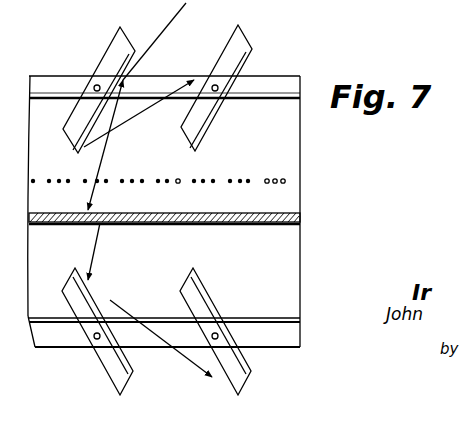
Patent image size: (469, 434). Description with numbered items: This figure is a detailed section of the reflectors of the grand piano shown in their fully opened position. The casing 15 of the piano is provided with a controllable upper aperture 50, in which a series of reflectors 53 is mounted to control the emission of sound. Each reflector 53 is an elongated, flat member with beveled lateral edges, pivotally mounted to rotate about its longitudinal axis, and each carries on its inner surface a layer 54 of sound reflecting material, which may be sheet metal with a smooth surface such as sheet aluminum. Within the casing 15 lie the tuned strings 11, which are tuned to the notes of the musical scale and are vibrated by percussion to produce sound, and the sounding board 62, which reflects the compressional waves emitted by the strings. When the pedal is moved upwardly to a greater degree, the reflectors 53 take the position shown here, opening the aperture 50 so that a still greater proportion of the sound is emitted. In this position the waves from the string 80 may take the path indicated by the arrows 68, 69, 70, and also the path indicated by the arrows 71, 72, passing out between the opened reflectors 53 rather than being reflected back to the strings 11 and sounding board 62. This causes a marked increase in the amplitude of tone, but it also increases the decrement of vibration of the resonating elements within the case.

The tuned strings 11 is at (181, 184).
The casing 15 is at (303, 157).
The upper aperture 50 is at (301, 76).
The reflector 53 is at (113, 53).
The layer of sound reflecting material 54 is at (209, 121).
The sounding board 62 is at (153, 216).
The arrow 68 is at (96, 193).
The arrow 69 is at (83, 172).
The arrow 70 is at (173, 92).
The arrow 71 is at (106, 137).
The arrow 72 is at (172, 23).
The string 80 is at (98, 180).